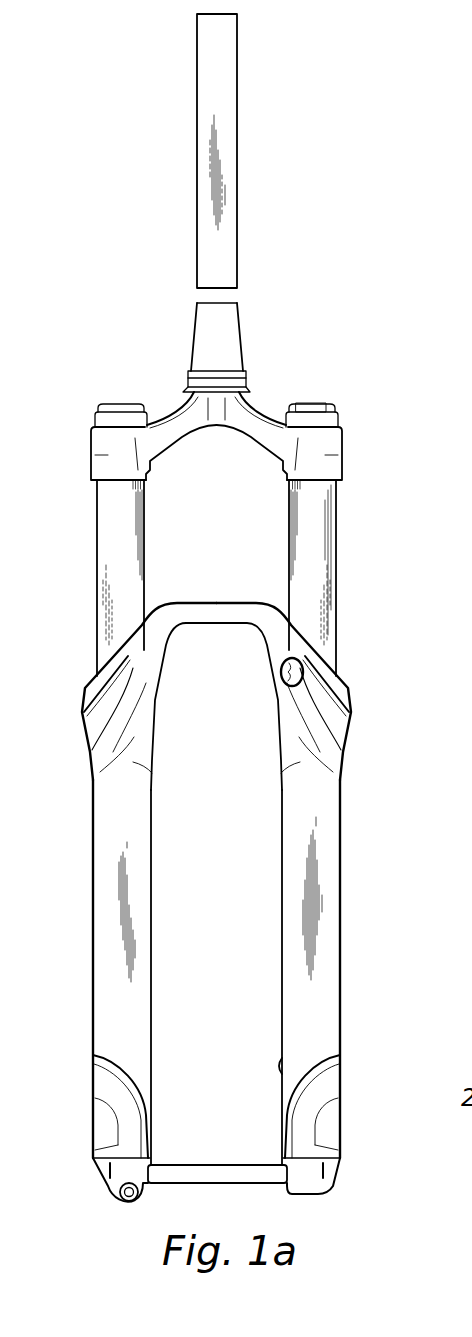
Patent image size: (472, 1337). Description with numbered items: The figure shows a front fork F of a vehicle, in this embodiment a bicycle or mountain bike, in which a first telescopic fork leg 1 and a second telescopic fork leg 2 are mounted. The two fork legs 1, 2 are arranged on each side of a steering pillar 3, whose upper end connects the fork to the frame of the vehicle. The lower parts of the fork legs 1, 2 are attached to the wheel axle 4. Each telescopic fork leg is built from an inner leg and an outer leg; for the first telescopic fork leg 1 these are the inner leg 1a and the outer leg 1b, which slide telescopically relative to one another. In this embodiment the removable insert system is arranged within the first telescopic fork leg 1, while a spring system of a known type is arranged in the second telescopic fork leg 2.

The first telescopic fork leg 1 is at (223, 920).
The inner leg 1a is at (336, 558).
The outer leg 1b is at (340, 825).
The second telescopic fork leg 2 is at (92, 918).
The steering pillar 3 is at (233, 160).
The wheel axle 4 is at (262, 1185).
The front fork F is at (382, 912).